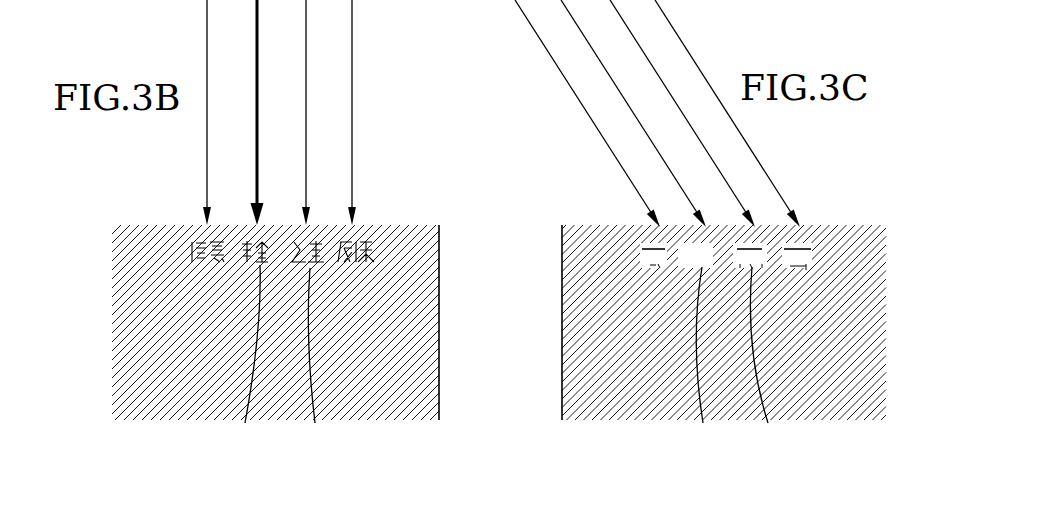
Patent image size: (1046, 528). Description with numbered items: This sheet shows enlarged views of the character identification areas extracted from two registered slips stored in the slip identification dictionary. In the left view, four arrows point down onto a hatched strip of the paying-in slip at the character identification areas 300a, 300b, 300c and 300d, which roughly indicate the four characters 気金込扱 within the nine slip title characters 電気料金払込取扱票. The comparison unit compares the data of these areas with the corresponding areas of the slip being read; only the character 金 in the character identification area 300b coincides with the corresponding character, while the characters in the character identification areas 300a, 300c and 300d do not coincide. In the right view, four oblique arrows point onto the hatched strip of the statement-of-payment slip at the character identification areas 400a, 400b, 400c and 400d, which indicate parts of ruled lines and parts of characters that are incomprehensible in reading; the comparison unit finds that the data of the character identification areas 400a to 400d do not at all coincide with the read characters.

In FIG. 3B, the character identification area 300a is at (207, 232).
In FIG. 3B, the character identification area 300b is at (245, 227).
In FIG. 3B, the character identification area 300c is at (324, 227).
In FIG. 3B, the character identification area 300d is at (352, 232).
In FIG. 3C, the character identification area 400a is at (653, 242).
In FIG. 3C, the character identification area 400b is at (647, 230).
In FIG. 3C, the character identification area 400c is at (708, 229).
In FIG. 3C, the character identification area 400d is at (798, 242).